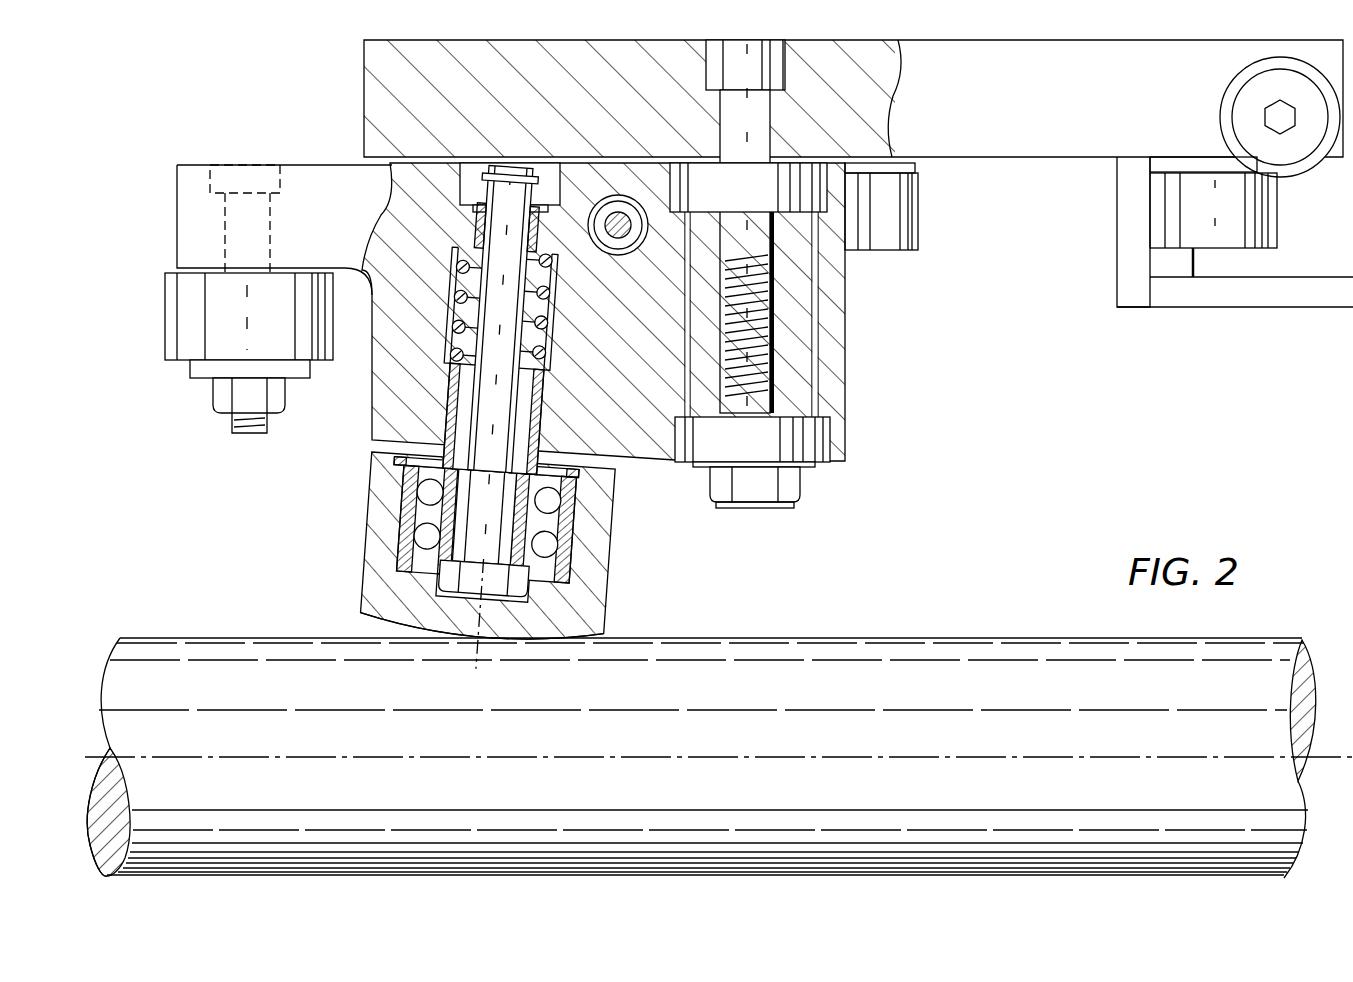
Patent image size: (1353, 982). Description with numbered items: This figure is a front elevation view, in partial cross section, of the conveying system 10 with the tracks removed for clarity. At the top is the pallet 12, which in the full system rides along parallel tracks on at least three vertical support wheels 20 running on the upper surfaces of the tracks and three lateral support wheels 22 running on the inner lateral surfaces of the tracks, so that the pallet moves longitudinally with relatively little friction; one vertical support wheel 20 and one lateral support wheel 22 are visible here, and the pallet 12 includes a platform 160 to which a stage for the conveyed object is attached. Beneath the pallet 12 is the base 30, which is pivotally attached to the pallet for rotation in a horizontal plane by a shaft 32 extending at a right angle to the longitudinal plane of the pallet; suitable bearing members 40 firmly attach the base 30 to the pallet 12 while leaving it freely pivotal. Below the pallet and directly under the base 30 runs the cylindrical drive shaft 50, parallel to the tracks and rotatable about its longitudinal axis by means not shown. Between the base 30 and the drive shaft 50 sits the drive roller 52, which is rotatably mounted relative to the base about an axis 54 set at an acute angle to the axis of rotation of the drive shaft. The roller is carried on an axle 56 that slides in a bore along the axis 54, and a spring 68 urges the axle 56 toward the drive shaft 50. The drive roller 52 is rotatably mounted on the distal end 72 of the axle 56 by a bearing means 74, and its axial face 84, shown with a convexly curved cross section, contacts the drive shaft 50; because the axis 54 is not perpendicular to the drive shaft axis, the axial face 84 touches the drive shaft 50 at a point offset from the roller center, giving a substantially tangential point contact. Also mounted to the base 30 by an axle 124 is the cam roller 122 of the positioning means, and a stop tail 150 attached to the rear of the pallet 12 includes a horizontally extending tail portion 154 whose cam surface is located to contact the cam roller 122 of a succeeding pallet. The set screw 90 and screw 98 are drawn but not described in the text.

The conveying system 10 is at (1108, 426).
The pallet 12 is at (1072, 172).
The vertical support wheel 20 is at (1225, 95).
The lateral support wheel 22 is at (918, 233).
The base 30 is at (590, 378).
The shaft 32 is at (784, 345).
The bearing members 40 is at (817, 183).
The drive shaft 50 is at (795, 707).
The drive roller 52 is at (600, 590).
The axis 54 is at (483, 653).
The axle 56 is at (470, 332).
The spring 68 is at (463, 342).
The distal end 72 is at (468, 539).
The bearing means 74 is at (578, 536).
The axial face 84 is at (415, 621).
The set screw 90 is at (645, 190).
The screw 98 is at (618, 240).
The cam roller 122 is at (172, 318).
The axle 124 is at (250, 425).
The stop tail 150 is at (1134, 318).
The tail portion 154 is at (1285, 296).
The platform 160 is at (1004, 113).